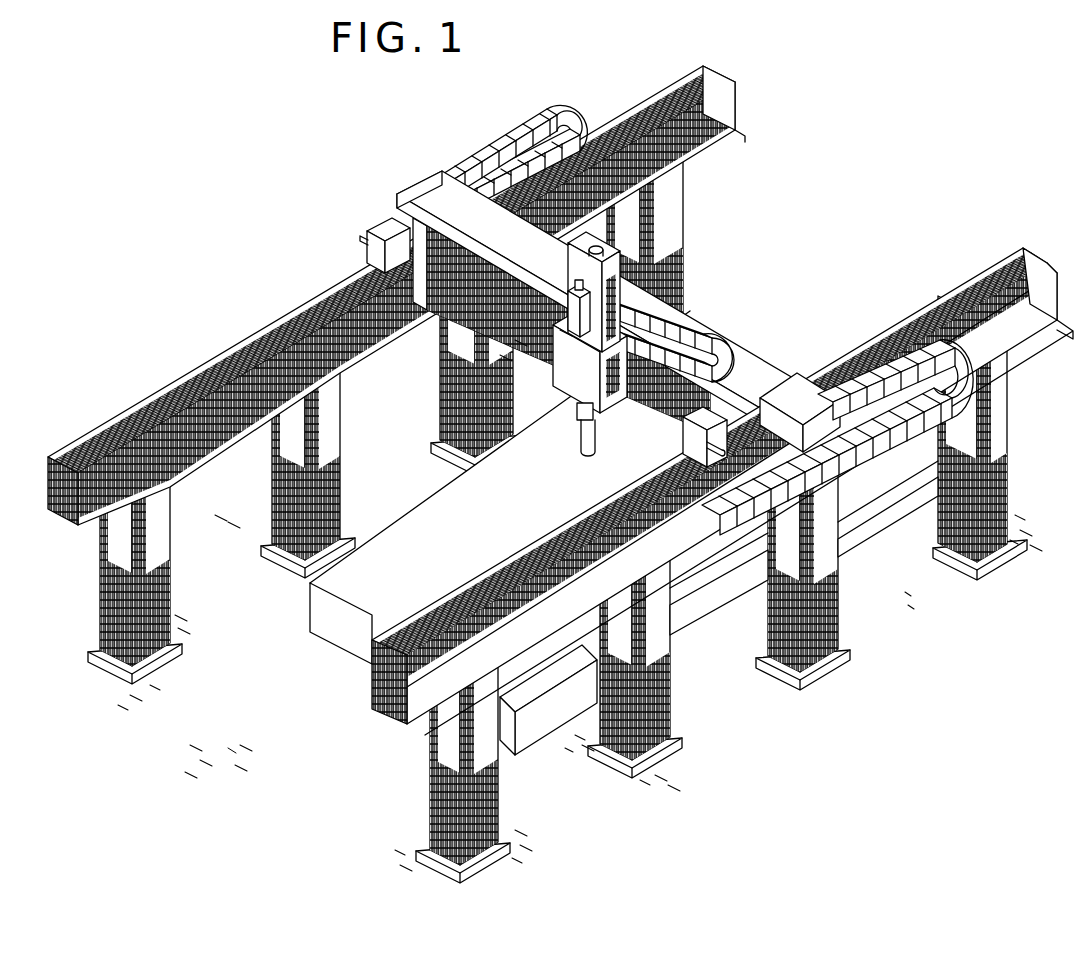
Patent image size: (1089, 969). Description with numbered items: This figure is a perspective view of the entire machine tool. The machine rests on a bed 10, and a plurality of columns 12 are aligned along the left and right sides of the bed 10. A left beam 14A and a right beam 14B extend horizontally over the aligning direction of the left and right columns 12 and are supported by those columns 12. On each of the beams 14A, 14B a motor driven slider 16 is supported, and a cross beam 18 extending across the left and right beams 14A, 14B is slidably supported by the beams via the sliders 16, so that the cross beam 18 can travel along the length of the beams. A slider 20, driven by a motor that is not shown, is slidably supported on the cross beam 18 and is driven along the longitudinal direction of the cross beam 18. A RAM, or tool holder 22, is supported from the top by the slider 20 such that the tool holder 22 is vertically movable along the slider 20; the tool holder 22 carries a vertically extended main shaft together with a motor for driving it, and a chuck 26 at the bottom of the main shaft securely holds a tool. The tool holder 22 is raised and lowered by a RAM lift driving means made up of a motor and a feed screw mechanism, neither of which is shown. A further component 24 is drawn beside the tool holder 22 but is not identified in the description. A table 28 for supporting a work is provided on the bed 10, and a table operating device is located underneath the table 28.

The gantry robot system 10 is at (243, 757).
The support columns 12 is at (665, 265).
The first longitudinal rail 14A is at (184, 388).
The second longitudinal rail 14B is at (955, 305).
The rail carriages 16 is at (405, 265).
The cross beam 18 is at (643, 413).
The cross beam carriage 20 is at (573, 380).
The vertical axis unit 22 is at (612, 290).
The drive motor 24 is at (545, 362).
The tool spindle 26 is at (590, 447).
The work table 28 is at (423, 550).